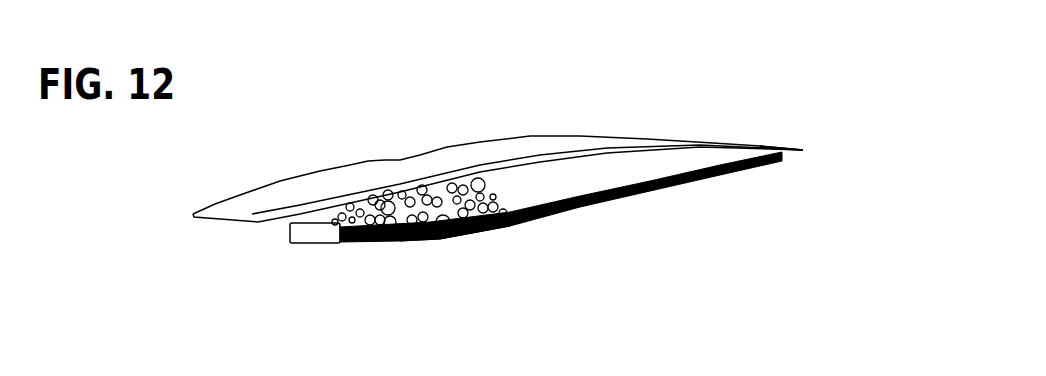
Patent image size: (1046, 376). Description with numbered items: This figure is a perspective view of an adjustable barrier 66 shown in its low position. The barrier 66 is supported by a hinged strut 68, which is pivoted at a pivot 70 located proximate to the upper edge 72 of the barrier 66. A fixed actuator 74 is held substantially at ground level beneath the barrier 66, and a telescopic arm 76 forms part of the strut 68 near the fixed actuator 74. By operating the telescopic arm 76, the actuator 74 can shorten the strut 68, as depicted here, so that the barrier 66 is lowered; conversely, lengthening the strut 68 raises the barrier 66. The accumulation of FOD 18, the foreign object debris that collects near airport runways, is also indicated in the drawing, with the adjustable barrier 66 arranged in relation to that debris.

The barrier 66 is at (647, 123).
The upper edge 72 is at (805, 149).
The hinged strut 68 is at (693, 182).
The pivot 70 is at (443, 242).
The telescopic arm 76 is at (418, 242).
The fixed actuator 74 is at (300, 238).
The FOD 18 is at (410, 200).